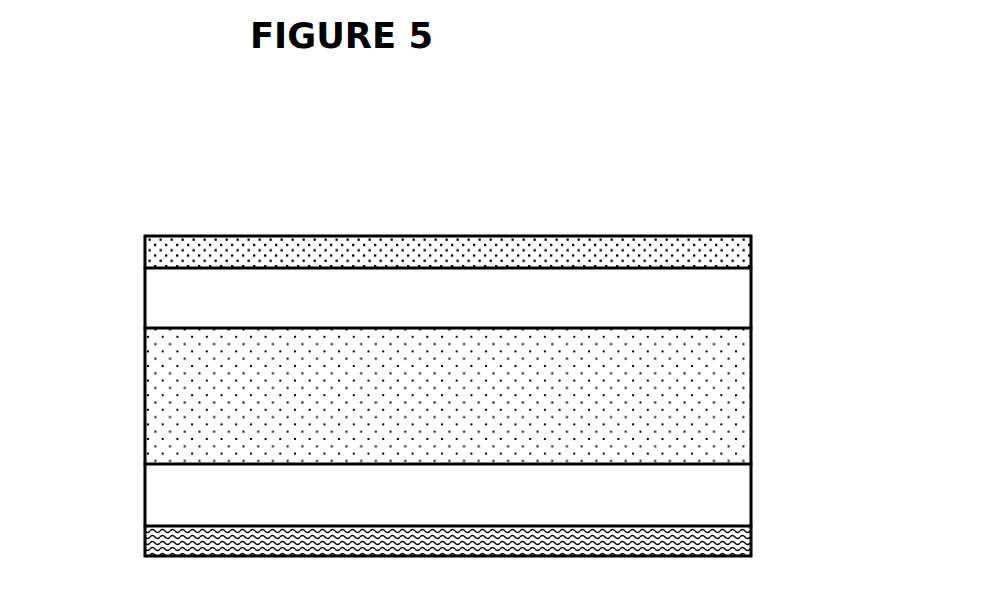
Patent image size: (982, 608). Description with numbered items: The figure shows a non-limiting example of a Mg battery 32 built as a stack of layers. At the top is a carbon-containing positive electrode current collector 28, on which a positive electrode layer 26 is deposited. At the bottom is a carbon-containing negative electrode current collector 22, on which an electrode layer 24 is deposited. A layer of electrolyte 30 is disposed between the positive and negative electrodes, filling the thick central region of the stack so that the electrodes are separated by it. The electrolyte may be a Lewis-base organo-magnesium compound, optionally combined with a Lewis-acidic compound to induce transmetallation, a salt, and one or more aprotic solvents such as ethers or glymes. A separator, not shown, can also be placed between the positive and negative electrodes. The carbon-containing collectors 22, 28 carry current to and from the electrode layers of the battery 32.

The carbon-containing negative electrode current collector 22 is at (160, 540).
The electrode layer 24 is at (160, 481).
The positive electrode layer 26 is at (160, 298).
The carbon-containing positive electrode current collector 28 is at (162, 253).
The core layer 30 is at (733, 404).
The Mg battery 32 is at (766, 222).